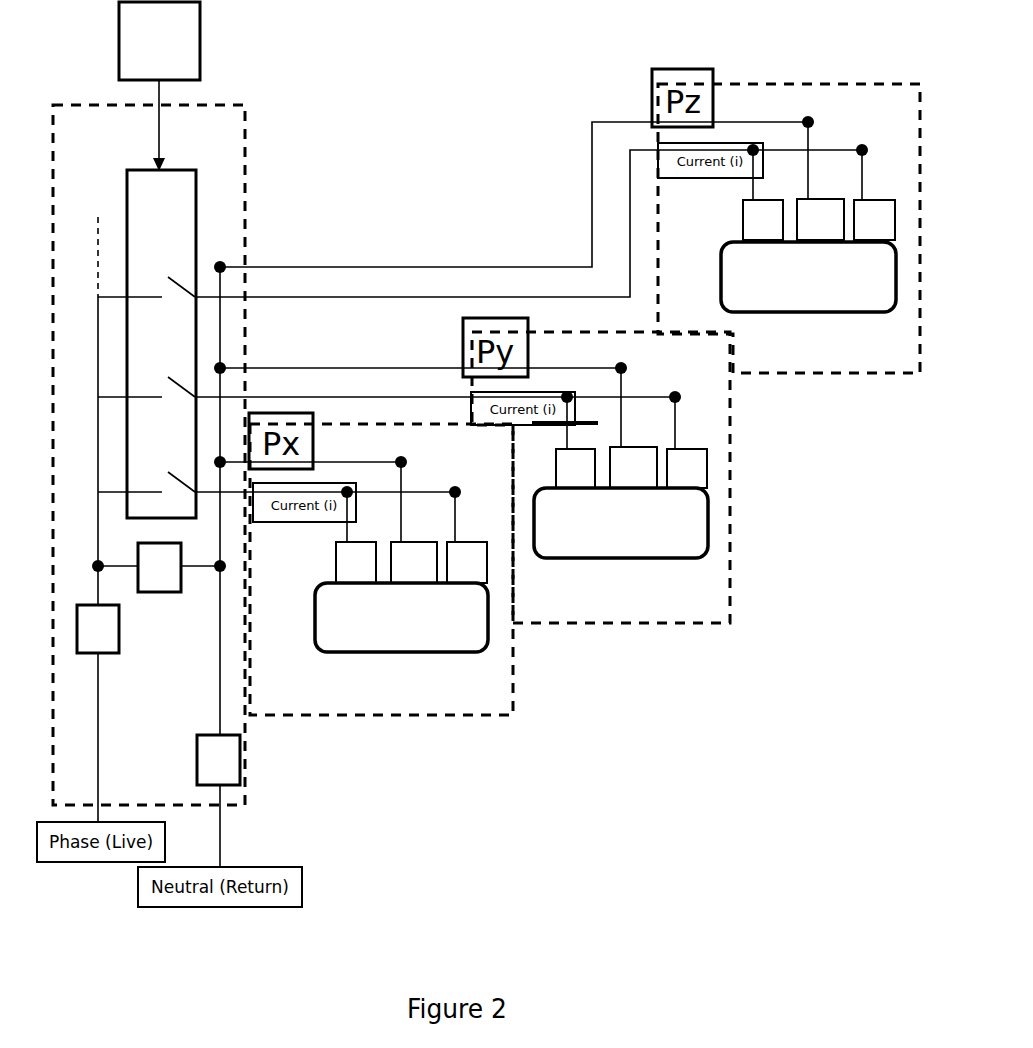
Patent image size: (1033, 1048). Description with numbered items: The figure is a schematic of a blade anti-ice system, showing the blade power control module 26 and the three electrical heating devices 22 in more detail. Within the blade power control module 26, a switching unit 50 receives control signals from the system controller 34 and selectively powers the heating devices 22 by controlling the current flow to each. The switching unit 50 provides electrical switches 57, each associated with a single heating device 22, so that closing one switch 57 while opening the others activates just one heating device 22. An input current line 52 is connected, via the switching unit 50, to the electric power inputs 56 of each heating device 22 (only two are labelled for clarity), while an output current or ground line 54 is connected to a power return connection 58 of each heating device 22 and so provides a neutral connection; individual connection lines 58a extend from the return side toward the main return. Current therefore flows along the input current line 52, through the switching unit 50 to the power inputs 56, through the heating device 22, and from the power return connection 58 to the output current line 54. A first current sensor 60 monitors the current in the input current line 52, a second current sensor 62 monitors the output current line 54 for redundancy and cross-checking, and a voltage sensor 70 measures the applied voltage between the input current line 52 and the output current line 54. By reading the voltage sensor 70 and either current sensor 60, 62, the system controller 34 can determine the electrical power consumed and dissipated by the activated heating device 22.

The system controller 34 is at (159, 86).
The blade power control module 26 is at (245, 133).
The switching unit 50 is at (197, 200).
The electrical switch 57 is at (146, 266).
The voltage sensor 70 is at (137, 557).
The first current sensor 60 is at (98, 653).
The second current sensor 62 is at (197, 757).
The input current line 52 is at (100, 740).
The output current line 54 is at (218, 677).
The electric power input 56 is at (336, 553).
The power return connection 58 is at (413, 542).
The connection line 58a is at (345, 463).
The electrical heating device 22 is at (450, 652).